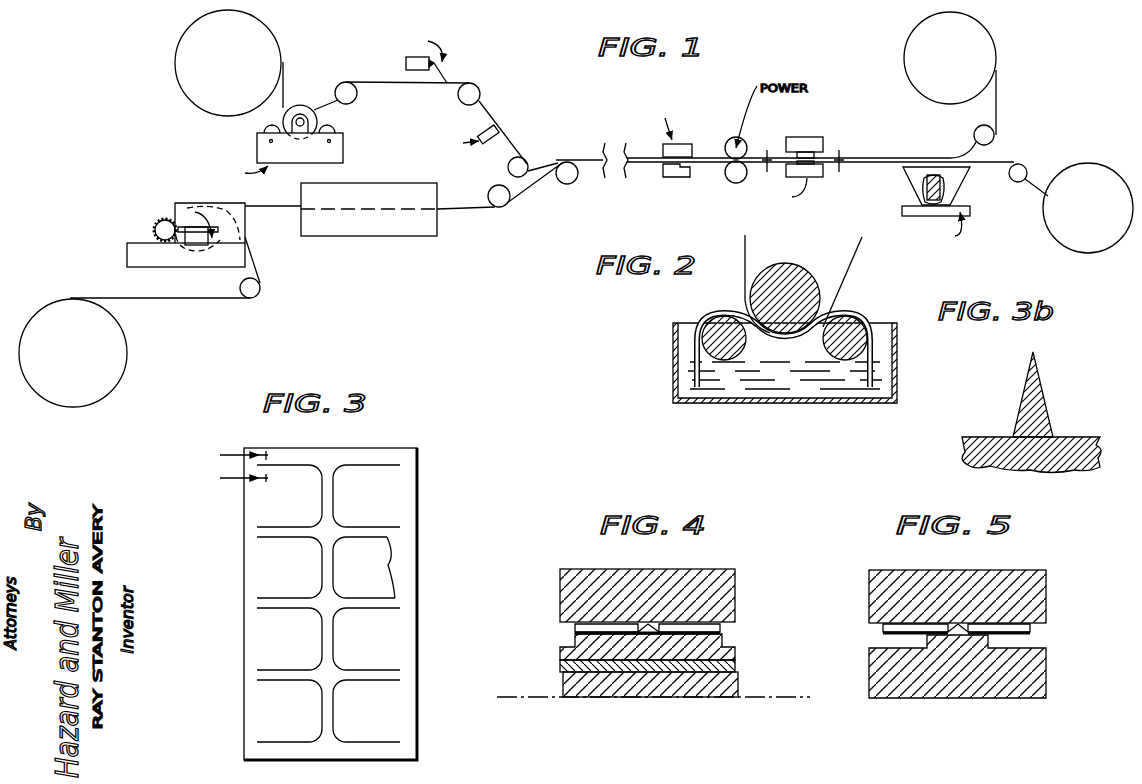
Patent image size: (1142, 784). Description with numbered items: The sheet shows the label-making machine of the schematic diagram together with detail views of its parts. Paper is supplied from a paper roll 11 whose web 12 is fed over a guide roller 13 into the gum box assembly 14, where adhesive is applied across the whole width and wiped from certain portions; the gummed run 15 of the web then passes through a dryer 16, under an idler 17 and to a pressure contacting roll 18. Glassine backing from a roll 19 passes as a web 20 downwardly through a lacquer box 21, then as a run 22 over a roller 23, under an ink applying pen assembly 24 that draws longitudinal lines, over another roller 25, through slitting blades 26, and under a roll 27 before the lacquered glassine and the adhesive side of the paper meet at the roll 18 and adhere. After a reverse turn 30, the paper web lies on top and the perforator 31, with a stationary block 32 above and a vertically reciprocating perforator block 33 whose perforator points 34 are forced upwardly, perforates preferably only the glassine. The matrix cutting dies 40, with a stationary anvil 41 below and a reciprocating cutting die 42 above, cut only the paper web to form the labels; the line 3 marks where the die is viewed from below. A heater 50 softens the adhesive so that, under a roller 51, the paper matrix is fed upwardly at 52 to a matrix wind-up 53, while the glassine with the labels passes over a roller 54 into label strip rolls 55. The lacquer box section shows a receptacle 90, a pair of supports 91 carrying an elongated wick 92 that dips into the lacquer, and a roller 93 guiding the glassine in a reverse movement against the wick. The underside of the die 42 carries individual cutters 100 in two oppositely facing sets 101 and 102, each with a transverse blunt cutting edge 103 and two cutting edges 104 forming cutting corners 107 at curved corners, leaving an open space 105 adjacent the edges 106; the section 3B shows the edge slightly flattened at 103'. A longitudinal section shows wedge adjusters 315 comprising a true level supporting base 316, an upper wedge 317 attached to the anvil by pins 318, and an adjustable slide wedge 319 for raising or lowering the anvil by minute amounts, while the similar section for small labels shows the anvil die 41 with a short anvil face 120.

In FIG. 1, the paper roll 11 is at (82, 375).
In FIG. 1, the web 12 is at (165, 306).
In FIG. 1, the guide roller 13 is at (242, 290).
In FIG. 1, the gum box assembly 14 is at (124, 242).
In FIG. 1, the gummed web 15 is at (278, 212).
In FIG. 1, the dryer 16 is at (424, 221).
In FIG. 1, the idler 17 is at (490, 192).
In FIG. 1, the pressure contacting roll 18 is at (560, 182).
In FIG. 1, the glassine roll 19 is at (183, 76).
In FIG. 1, the glassine web 20 is at (284, 78).
In FIG. 1, the lacquer box 21 is at (254, 149).
In FIG. 2, the lacquer box 21 is at (849, 273).
In FIG. 1, the run of the web 22 is at (324, 110).
In FIG. 1, the roller 23 is at (357, 93).
In FIG. 1, the ink applying pen assembly 24 is at (455, 45).
In FIG. 1, the roller 25 is at (478, 88).
In FIG. 1, the slitting blades 26 is at (490, 118).
In FIG. 1, the roll 27 is at (509, 158).
In FIG. 1, the reverse turn 30 is at (625, 181).
In FIG. 1, the perforator 31 is at (688, 130).
In FIG. 1, the stationary block 32 is at (684, 151).
In FIG. 1, the reciprocating perforator block 33 is at (676, 178).
In FIG. 1, the perforator points 34 is at (700, 164).
In FIG. 1, the section line 3 is at (800, 169).
In FIG. 1, the matrix cutting dies 40 is at (808, 126).
In FIG. 4, the matrix cutting dies 40 is at (742, 534).
In FIG. 1, the anvil 41 is at (812, 178).
In FIG. 4, the anvil 41 is at (690, 652).
In FIG. 5, the anvil 41 is at (1036, 688).
In FIG. 1, the cutting die 42 is at (791, 136).
In FIG. 3, the cutting die 42 is at (430, 460).
In FIG. 4, the cutting die 42 is at (552, 572).
In FIG. 5, the cutting die 42 is at (905, 570).
In FIG. 1, the heater 50 is at (918, 185).
In FIG. 1, the roller 51 is at (976, 134).
In FIG. 1, the matrix path 52 is at (997, 103).
In FIG. 1, the matrix wind-up 53 is at (960, 80).
In FIG. 1, the roller 54 is at (1012, 180).
In FIG. 1, the label strip rolls 55 is at (1087, 173).
In FIG. 2, the receptacle 90 is at (673, 345).
In FIG. 2, the supports 91 is at (720, 337).
In FIG. 2, the wick 92 is at (782, 345).
In FIG. 2, the roller 93 is at (802, 245).
In FIG. 3, the section of the cutting edge 3B is at (232, 471).
In FIG. 3, the individual cutters 100 is at (255, 645).
In FIG. 3, the first set of cutters 101 is at (280, 571).
In FIG. 3, the second set of cutters 102 is at (385, 636).
In FIG. 3, the transverse blunt cutting edge 103 is at (322, 538).
In FIG. 3B, the flattened die edge 103' is at (1023, 384).
In FIG. 3, the cutting edges 104 is at (282, 580).
In FIG. 3B, the cutting edges 104 is at (1025, 408).
In FIG. 3, the open space 105 is at (275, 720).
In FIG. 3, the edges of the die element 106 is at (418, 655).
In FIG. 3, the cutting corners 107 is at (337, 612).
In FIG. 5, the short anvil face 120 is at (950, 637).
In FIG. 4, the wedge adjusters 315 is at (586, 702).
In FIG. 4, the supporting base 316 is at (777, 697).
In FIG. 4, the upper wedge 317 is at (560, 667).
In FIG. 4, the pins 318 is at (575, 645).
In FIG. 4, the adjustable slide wedge 319 is at (720, 680).